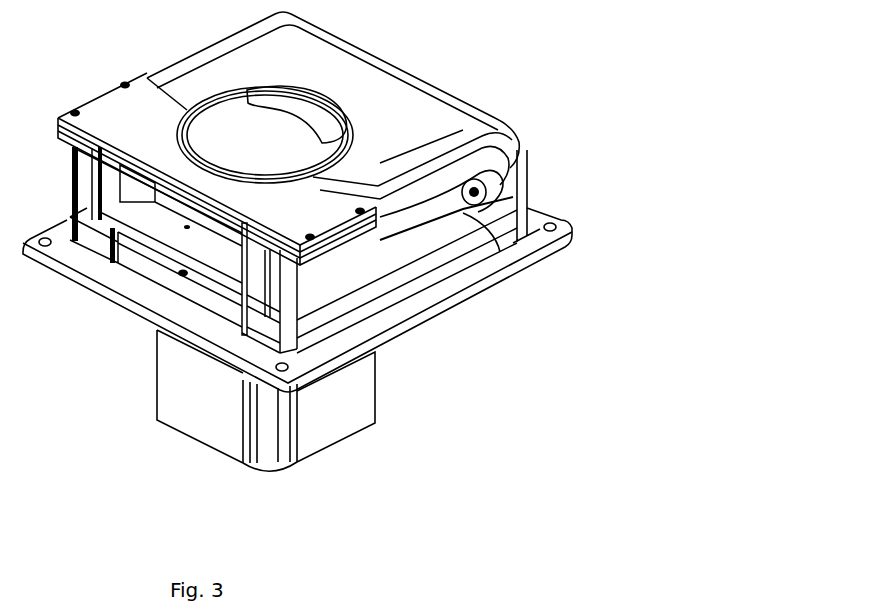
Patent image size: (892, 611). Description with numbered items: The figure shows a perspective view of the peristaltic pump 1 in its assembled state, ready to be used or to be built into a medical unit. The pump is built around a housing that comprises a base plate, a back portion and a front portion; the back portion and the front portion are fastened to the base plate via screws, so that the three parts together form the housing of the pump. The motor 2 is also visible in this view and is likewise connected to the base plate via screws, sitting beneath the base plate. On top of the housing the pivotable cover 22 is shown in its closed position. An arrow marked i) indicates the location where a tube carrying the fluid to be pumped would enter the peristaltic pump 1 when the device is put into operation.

The peristaltic pump 1 is at (467, 65).
The motor 2 is at (347, 397).
The pivotable cover 22 is at (112, 122).